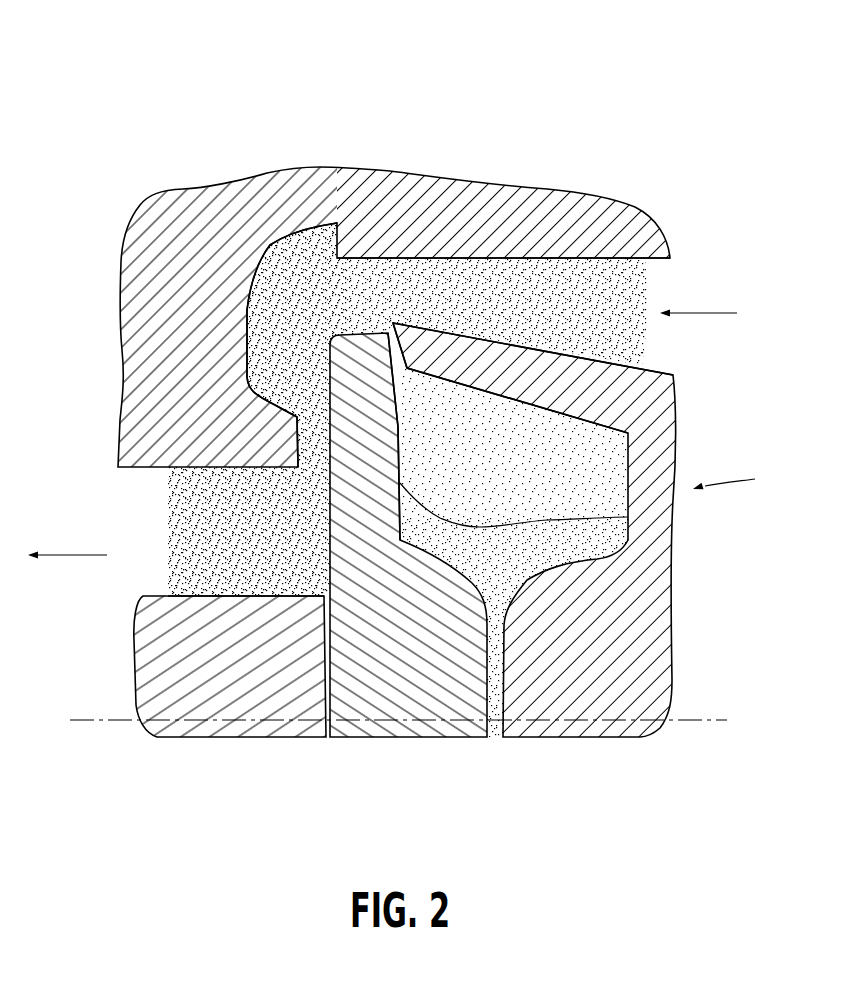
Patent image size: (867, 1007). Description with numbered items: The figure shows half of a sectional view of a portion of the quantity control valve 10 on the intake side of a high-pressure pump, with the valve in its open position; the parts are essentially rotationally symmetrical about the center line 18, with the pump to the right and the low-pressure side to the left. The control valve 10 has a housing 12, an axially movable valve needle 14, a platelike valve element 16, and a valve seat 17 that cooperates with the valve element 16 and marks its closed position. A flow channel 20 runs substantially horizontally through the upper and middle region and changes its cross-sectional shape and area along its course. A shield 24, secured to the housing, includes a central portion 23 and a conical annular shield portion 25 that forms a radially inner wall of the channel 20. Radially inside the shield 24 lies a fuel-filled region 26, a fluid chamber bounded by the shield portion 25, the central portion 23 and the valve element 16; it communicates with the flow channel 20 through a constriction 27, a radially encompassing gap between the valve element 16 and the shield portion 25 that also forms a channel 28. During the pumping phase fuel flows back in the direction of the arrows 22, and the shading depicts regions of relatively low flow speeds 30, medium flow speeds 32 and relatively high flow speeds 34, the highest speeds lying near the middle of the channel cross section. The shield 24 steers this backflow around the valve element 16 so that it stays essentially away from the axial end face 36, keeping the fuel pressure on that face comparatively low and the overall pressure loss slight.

The quantity control valve 10 is at (479, 103).
The housing 12 is at (153, 275).
The valve needle 14 is at (157, 685).
The valve element 16 is at (417, 700).
The valve seat 17 is at (287, 433).
The center line 18 is at (720, 722).
The flow channel 20 is at (584, 250).
The arrows 22 is at (708, 313).
The central portion 23 is at (630, 630).
The shield 24 is at (738, 478).
The shield portion 25 is at (492, 360).
The region 26 is at (616, 451).
The constriction 27 is at (388, 320).
The channel 28 is at (416, 338).
The regions of relatively low flow speeds 30 is at (295, 300).
The regions of medium flow speeds 32 is at (333, 337).
The regions of relatively high flow speeds 34 is at (227, 568).
The axial end face 36 is at (628, 517).